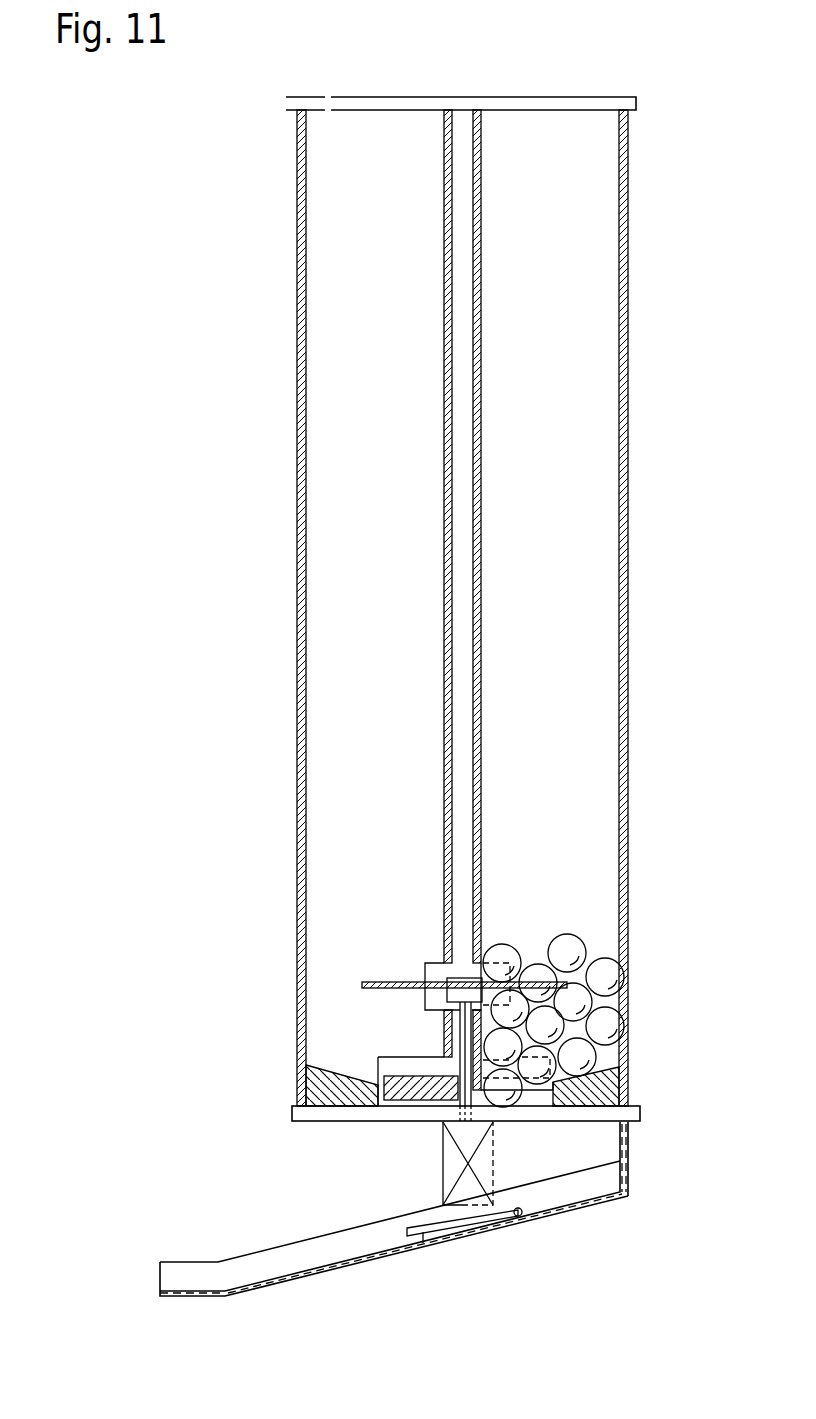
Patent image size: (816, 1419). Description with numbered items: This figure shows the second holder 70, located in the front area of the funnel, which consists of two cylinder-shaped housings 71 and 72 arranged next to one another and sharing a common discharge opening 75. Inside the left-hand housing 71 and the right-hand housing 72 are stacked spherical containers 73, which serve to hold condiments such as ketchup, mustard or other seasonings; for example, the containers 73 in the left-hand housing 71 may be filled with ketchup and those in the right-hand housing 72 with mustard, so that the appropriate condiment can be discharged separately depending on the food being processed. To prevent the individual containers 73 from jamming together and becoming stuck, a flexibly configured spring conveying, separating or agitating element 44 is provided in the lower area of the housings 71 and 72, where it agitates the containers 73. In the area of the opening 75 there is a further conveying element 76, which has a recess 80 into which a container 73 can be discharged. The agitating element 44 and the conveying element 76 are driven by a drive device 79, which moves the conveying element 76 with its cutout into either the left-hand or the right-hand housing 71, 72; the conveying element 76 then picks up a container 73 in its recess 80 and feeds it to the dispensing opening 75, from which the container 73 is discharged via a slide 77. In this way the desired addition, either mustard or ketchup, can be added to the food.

The second holder 70 is at (572, 101).
The left-hand housing 71 is at (322, 312).
The right-hand housing 72 is at (601, 318).
The agitating element 44 is at (383, 978).
The spherical containers 73 is at (607, 1027).
The discharge opening 75 is at (482, 1122).
The conveying element 76 is at (399, 1094).
The slide 77 is at (368, 1242).
The drive device 79 is at (455, 1170).
The recess 80 is at (540, 1085).